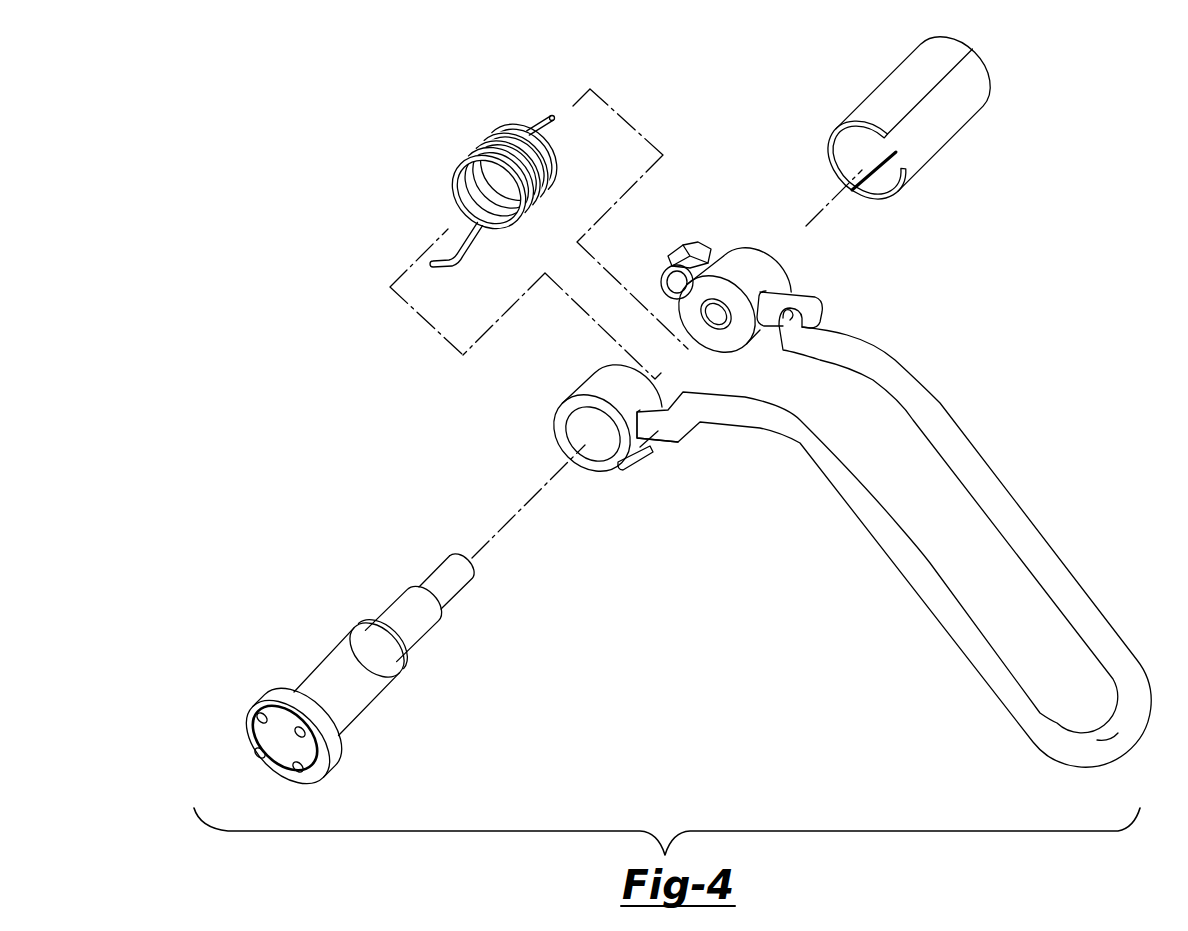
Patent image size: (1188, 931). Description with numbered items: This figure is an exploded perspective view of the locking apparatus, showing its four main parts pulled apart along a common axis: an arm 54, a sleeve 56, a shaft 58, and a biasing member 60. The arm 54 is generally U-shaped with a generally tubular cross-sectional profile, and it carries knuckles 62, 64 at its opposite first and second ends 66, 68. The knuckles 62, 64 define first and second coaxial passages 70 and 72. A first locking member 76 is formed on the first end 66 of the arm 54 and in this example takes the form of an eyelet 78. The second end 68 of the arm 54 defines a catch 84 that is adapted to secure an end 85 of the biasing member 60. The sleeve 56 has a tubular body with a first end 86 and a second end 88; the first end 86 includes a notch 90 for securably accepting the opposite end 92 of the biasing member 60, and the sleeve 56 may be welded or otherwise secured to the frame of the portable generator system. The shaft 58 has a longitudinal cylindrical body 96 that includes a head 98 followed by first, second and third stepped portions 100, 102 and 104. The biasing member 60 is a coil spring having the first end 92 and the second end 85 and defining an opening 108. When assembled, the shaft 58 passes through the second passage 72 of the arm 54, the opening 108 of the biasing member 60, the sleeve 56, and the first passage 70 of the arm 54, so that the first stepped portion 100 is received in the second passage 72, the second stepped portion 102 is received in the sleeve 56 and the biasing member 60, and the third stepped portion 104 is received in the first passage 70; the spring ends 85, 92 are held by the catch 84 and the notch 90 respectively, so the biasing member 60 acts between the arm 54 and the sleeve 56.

The arm 54 is at (894, 510).
The sleeve 56 is at (895, 150).
The shaft 58 is at (382, 676).
The biasing member 60 is at (480, 183).
The knuckle 62 is at (692, 291).
The knuckle 64 is at (585, 446).
The first end 66 is at (796, 268).
The second end 68 is at (698, 462).
The first passage 70 is at (717, 330).
The second passage 72 is at (580, 434).
The first locking member 76 is at (680, 258).
The eyelet 78 is at (672, 285).
The catch 84 is at (635, 466).
The end of biasing member 85 is at (458, 255).
The first end of sleeve 86 is at (818, 146).
The second end of sleeve 88 is at (900, 41).
The notch 90 is at (870, 192).
The end of biasing member 92 is at (542, 122).
The longitudinal cylindrical body 96 is at (324, 672).
The head 98 is at (273, 698).
The first stepped portion 100 is at (343, 715).
The second stepped portion 102 is at (400, 647).
The third stepped portion 104 is at (447, 598).
The opening 108 is at (503, 203).